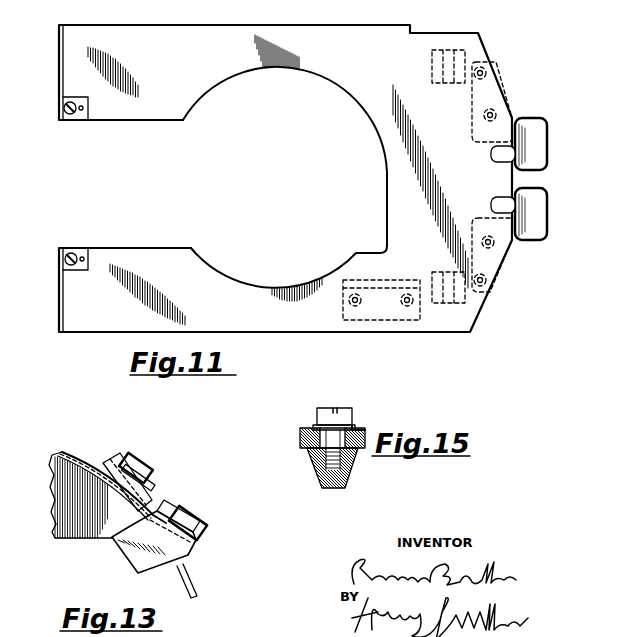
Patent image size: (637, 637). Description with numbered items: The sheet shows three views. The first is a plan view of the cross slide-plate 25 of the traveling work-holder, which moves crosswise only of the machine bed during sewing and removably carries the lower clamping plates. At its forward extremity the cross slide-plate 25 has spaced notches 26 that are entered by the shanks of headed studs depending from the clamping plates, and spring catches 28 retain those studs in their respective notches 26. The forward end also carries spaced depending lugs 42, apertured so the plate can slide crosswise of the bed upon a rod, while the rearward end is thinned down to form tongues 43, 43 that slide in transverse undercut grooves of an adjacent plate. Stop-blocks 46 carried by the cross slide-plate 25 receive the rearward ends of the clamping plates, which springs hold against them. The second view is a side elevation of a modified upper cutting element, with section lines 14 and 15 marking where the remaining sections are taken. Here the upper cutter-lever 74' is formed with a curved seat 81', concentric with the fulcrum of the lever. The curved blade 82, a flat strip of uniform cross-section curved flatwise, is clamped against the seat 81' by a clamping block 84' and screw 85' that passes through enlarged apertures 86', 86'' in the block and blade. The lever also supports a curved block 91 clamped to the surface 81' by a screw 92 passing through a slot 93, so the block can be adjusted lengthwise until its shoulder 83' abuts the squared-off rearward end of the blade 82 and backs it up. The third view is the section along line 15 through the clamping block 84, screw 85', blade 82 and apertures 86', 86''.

In FIG. 11, the tongue 43 is at (60, 108).
In FIG. 11, the stop-block 46 is at (82, 104).
In FIG. 11, the cross slide-plate 25 is at (389, 175).
In FIG. 11, the depending lug 42 is at (432, 76).
In FIG. 11, the notch 26 is at (493, 154).
In FIG. 11, the spring catch 28 is at (531, 179).
In FIG. 13, the section line 14— 14 is at (171, 437).
In FIG. 13, the section line 15— 15 is at (238, 511).
In FIG. 13, the upper cutter-lever 74' is at (62, 497).
In FIG. 13, the curved seat 81' is at (130, 466).
In FIG. 15, the curved seat 81' is at (337, 457).
In FIG. 13, the curved block 91 is at (108, 460).
In FIG. 13, the screw 92 is at (142, 460).
In FIG. 13, the slot 93 is at (124, 466).
In FIG. 13, the shoulder 83' is at (171, 498).
In FIG. 13, the clamping block 84' is at (191, 525).
In FIG. 13, the screw 85' is at (200, 511).
In FIG. 15, the screw 85' is at (335, 402).
In FIG. 13, the curved blade 82 is at (192, 582).
In FIG. 15, the curved blade 82 is at (313, 438).
In FIG. 15, the plate 84 is at (337, 457).
In FIG. 15, the enlarged aperture 86' is at (371, 408).
In FIG. 15, the enlarged aperture 86'' is at (380, 416).